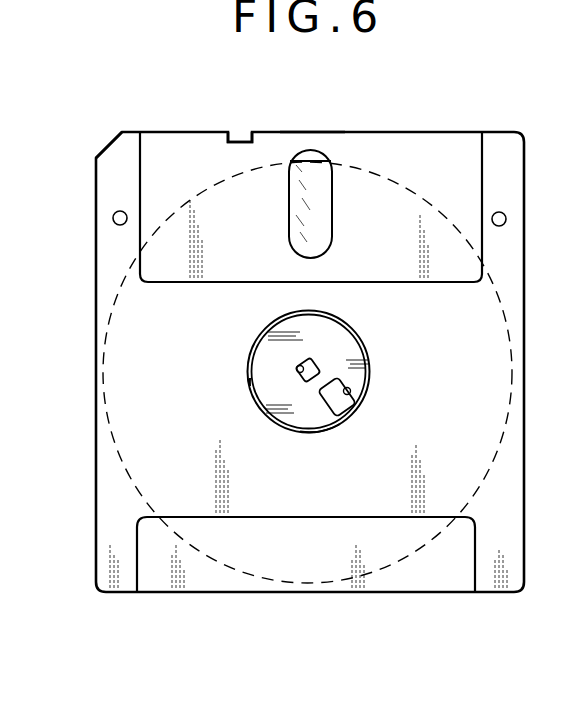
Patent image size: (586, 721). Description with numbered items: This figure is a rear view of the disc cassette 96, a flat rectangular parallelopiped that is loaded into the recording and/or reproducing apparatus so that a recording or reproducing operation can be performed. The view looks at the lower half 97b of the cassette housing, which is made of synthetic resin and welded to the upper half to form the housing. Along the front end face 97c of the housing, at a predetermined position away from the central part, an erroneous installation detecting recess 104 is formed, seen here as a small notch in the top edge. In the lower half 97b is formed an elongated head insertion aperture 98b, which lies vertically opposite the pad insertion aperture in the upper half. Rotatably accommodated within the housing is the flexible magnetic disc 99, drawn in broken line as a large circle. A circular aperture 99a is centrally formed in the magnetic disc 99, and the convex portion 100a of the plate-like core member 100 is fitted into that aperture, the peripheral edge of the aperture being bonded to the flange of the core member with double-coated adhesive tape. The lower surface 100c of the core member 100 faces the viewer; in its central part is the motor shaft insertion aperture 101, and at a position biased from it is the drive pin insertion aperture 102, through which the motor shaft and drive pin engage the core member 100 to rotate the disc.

The disc cassette 96 is at (177, 130).
The lower half 97b is at (98, 163).
The front end face 97c is at (310, 132).
The head insertion aperture 98b is at (329, 223).
The flexible magnetic disc 99 is at (108, 334).
The circular aperture 99a is at (250, 385).
The core member 100 is at (336, 333).
The convex portion 100a is at (368, 345).
The lower surface 100c is at (327, 426).
The motor shaft insertion aperture 101 is at (297, 370).
The drive pin insertion aperture 102 is at (352, 403).
The erroneous installation detecting recess 104 is at (250, 132).